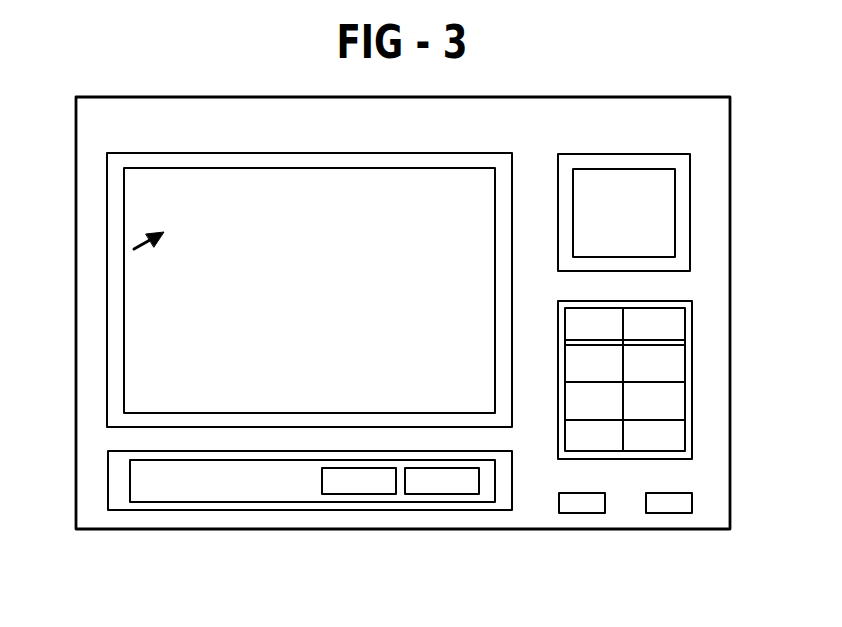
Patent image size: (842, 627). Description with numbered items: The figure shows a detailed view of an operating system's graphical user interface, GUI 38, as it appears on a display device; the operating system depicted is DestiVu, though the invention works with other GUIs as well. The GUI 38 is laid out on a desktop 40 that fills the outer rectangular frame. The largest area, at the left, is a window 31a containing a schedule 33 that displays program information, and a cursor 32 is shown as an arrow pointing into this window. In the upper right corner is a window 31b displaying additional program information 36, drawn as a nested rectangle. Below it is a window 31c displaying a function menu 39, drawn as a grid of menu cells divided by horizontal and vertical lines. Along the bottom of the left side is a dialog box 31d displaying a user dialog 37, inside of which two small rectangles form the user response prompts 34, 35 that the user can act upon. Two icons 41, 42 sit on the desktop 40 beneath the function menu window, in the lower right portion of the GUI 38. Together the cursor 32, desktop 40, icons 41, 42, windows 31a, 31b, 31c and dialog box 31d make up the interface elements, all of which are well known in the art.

The GUI 38 is at (112, 97).
The desktop 40 is at (100, 128).
The window 31a is at (175, 160).
The window 31b is at (676, 160).
The window 31c is at (692, 343).
The dialog box 31d is at (118, 488).
The cursor 32 is at (136, 243).
The schedule 33 is at (124, 337).
The user response prompt 34 is at (374, 488).
The user response prompt 35 is at (408, 567).
The additional program information 36 is at (655, 204).
The user dialog 37 is at (218, 502).
The function menu 39 is at (650, 393).
The icon 41 is at (590, 507).
The icon 42 is at (662, 507).